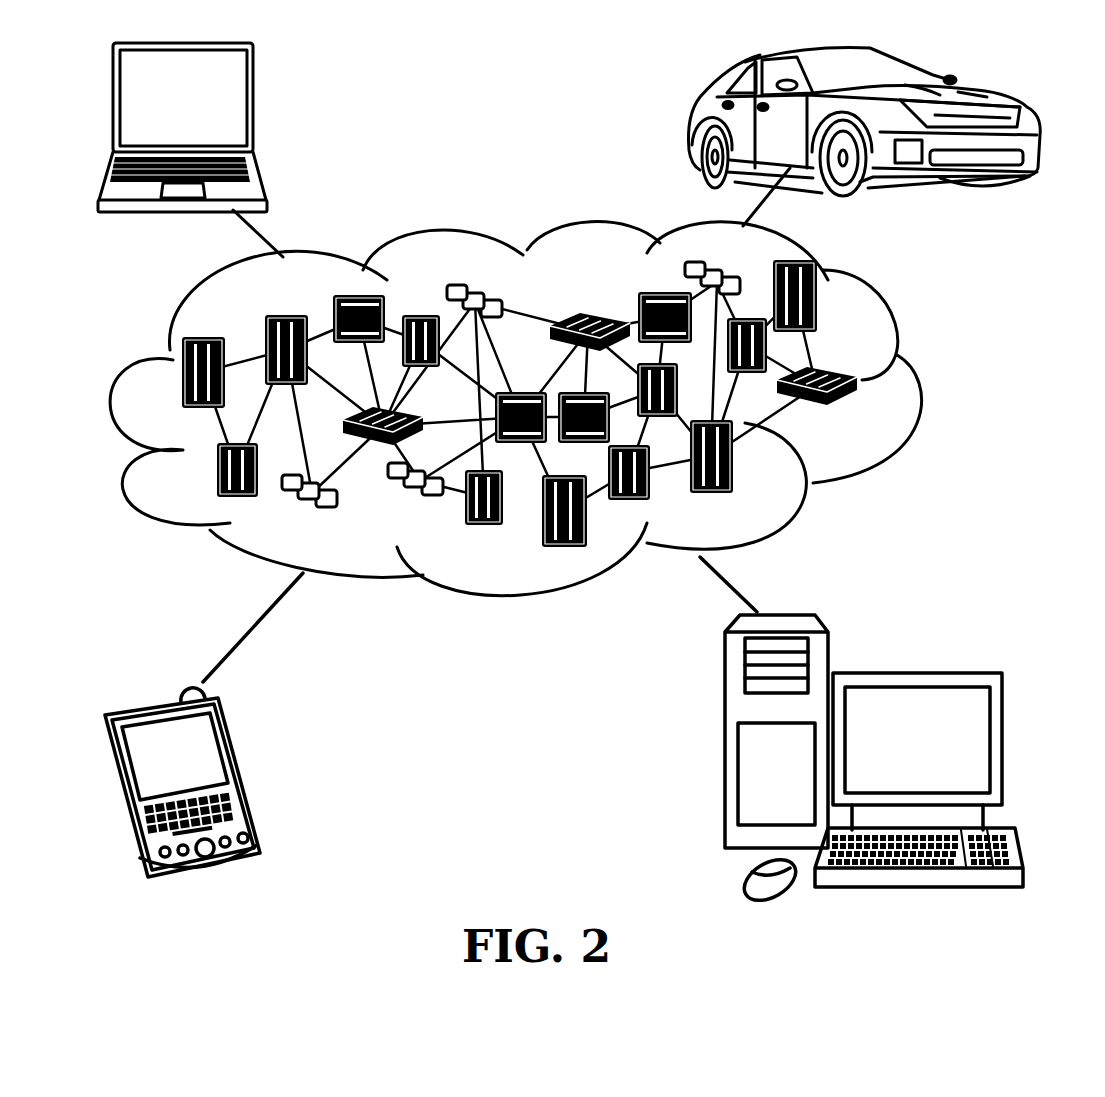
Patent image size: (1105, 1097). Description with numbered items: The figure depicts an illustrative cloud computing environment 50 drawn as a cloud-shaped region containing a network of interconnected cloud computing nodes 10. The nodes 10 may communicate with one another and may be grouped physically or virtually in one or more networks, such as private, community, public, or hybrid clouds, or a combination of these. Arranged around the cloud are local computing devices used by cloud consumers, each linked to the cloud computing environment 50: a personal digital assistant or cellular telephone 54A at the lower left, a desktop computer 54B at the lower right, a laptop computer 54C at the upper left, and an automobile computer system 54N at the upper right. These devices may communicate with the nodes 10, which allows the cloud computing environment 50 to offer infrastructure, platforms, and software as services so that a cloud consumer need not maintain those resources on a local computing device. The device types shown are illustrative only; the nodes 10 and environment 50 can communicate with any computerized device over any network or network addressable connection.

The cloud computing environment 50 is at (915, 383).
The cloud computing nodes 10 is at (866, 418).
The personal digital assistant (PDA) or cellular telephone 54A is at (243, 771).
The desktop computer 54B is at (917, 673).
The laptop computer 54C is at (254, 107).
The automobile computer system 54N is at (692, 122).